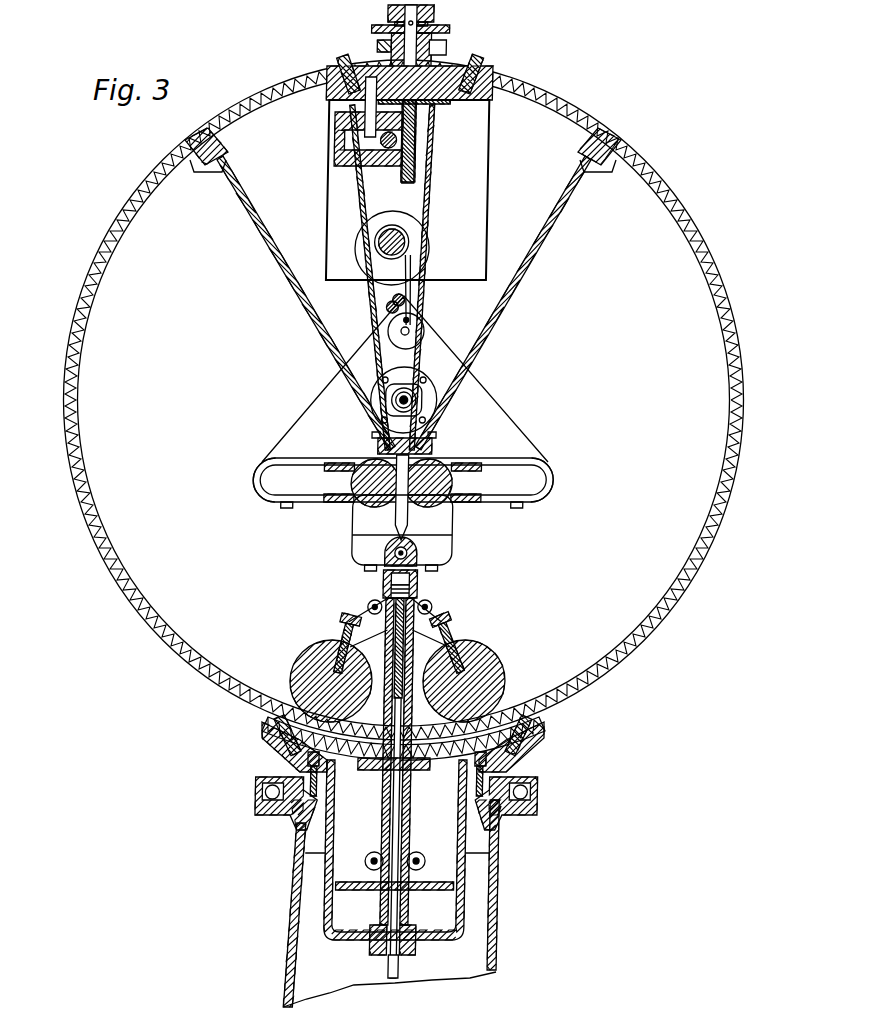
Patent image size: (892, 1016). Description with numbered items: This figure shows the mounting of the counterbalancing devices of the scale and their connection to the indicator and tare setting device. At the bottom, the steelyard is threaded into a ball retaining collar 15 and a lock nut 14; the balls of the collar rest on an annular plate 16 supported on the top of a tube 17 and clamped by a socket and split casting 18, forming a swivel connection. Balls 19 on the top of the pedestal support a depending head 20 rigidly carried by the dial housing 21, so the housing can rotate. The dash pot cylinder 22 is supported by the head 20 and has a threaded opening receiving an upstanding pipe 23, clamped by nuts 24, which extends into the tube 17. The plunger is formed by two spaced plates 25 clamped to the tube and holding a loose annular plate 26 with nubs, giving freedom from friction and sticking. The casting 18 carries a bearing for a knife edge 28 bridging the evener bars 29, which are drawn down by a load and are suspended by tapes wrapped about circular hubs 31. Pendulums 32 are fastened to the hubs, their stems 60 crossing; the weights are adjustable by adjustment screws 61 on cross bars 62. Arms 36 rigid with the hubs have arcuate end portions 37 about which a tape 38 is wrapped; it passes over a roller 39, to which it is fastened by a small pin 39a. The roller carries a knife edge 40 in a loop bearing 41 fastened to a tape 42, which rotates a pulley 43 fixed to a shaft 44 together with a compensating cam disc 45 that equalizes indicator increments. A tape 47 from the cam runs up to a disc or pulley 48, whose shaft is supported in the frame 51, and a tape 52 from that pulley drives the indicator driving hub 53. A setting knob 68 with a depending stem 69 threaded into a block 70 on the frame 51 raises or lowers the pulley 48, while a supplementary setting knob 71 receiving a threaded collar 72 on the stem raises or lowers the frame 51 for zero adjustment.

The lock nut 14 is at (387, 582).
The ball retaining collar 15 is at (433, 582).
The annular plate 16 is at (429, 590).
The tube 17 is at (415, 718).
The socket and split casting 18 is at (385, 606).
The balls 19 is at (268, 797).
The depending head 20 is at (526, 748).
The dial housing 21 is at (729, 526).
The dash pot cylinder 22 is at (472, 915).
The upstanding pipe 23 is at (411, 847).
The nuts 24 is at (409, 928).
The spaced plates 25 is at (380, 868).
The loose annular plate 26 is at (352, 888).
The knife edge 28 is at (391, 554).
The evener bars 29 is at (451, 549).
The circular hubs 31 is at (376, 462).
The pendulums 32 is at (313, 660).
The arms 36 is at (519, 470).
The arcuate end portions 37 is at (263, 478).
The tape 38 is at (324, 401).
The roller 39 is at (419, 348).
The pin 39a is at (414, 322).
The knife edge 40 is at (412, 331).
The loop bearing 41 is at (394, 310).
The tape 42 is at (409, 291).
The pulley 43 is at (382, 246).
The shaft 44 is at (385, 252).
The compensating cam disc 45 is at (421, 243).
The tape 47 is at (433, 197).
The disc or pulley 48 is at (374, 168).
The frame 51 is at (338, 134).
The tape 52 is at (379, 296).
The indicator driving hub 53 is at (413, 398).
The stems 60 is at (366, 525).
The adjustment screws 61 is at (351, 621).
The cross bars 62 is at (349, 632).
The setting knob 68 is at (434, 13).
The depending stem 69 is at (395, 66).
The block 70 is at (350, 116).
The supplementary setting knob 71 is at (447, 48).
The threaded collar 72 is at (380, 70).